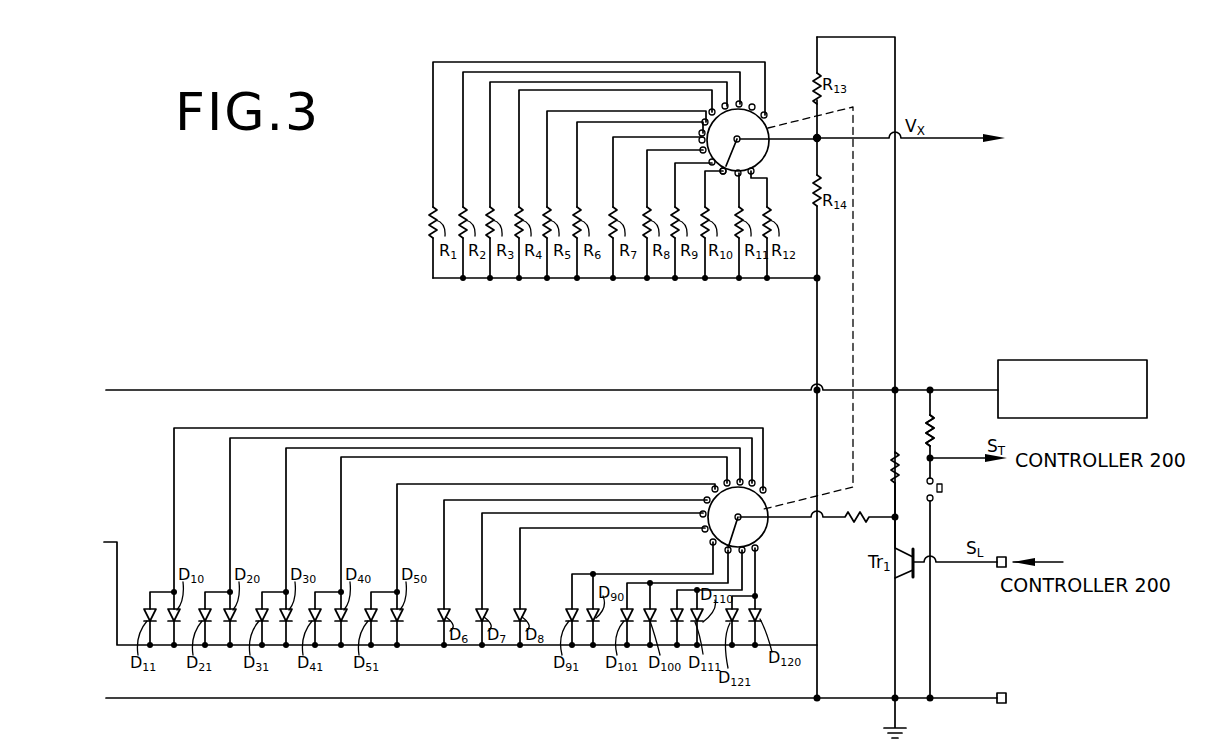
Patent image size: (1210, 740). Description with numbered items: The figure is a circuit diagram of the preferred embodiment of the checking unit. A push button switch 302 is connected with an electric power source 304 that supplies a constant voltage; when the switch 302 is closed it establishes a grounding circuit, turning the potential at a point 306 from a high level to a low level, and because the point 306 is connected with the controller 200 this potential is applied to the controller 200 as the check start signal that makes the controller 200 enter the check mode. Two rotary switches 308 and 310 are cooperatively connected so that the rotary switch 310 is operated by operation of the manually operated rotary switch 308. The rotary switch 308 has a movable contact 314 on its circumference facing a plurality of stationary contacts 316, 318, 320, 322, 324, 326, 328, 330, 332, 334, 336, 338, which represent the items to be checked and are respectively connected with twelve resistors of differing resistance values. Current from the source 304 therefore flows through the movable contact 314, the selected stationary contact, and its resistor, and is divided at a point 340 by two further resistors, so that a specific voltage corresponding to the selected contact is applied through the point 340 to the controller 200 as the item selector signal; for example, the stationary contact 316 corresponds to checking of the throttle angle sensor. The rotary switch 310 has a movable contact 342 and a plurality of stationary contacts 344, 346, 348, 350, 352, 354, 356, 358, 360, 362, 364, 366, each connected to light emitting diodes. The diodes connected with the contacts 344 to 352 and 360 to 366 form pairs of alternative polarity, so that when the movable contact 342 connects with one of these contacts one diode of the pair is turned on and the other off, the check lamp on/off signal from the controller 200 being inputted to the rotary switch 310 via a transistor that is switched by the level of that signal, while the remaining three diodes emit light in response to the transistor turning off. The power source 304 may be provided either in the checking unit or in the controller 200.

The controller 200 is at (1097, 138).
The push button switch 302 is at (941, 481).
The electric power source 304 is at (1085, 360).
The point 306 is at (933, 450).
The rotary switch 308 is at (768, 127).
The rotary switch 310 is at (764, 502).
The movable contact 314 is at (745, 156).
The stationary contact 316 is at (765, 114).
The stationary contact 318 is at (741, 103).
The stationary contact 320 is at (753, 105).
The stationary contact 322 is at (726, 104).
The stationary contact 324 is at (712, 110).
The stationary contact 326 is at (705, 122).
The stationary contact 328 is at (702, 140).
The stationary contact 330 is at (762, 140).
The stationary contact 332 is at (725, 173).
The stationary contact 334 is at (726, 173).
The stationary contact 336 is at (742, 174).
The stationary contact 338 is at (755, 170).
The point 340 is at (820, 138).
The movable contact 342 is at (750, 518).
The stationary contact 344 is at (764, 489).
The stationary contact 346 is at (754, 482).
The stationary contact 348 is at (741, 482).
The stationary contact 350 is at (728, 482).
The stationary contact 352 is at (714, 488).
The stationary contact 354 is at (706, 499).
The stationary contact 356 is at (702, 514).
The stationary contact 358 is at (704, 529).
The stationary contact 360 is at (712, 543).
The stationary contact 362 is at (730, 552).
The stationary contact 364 is at (744, 551).
The stationary contact 366 is at (757, 548).